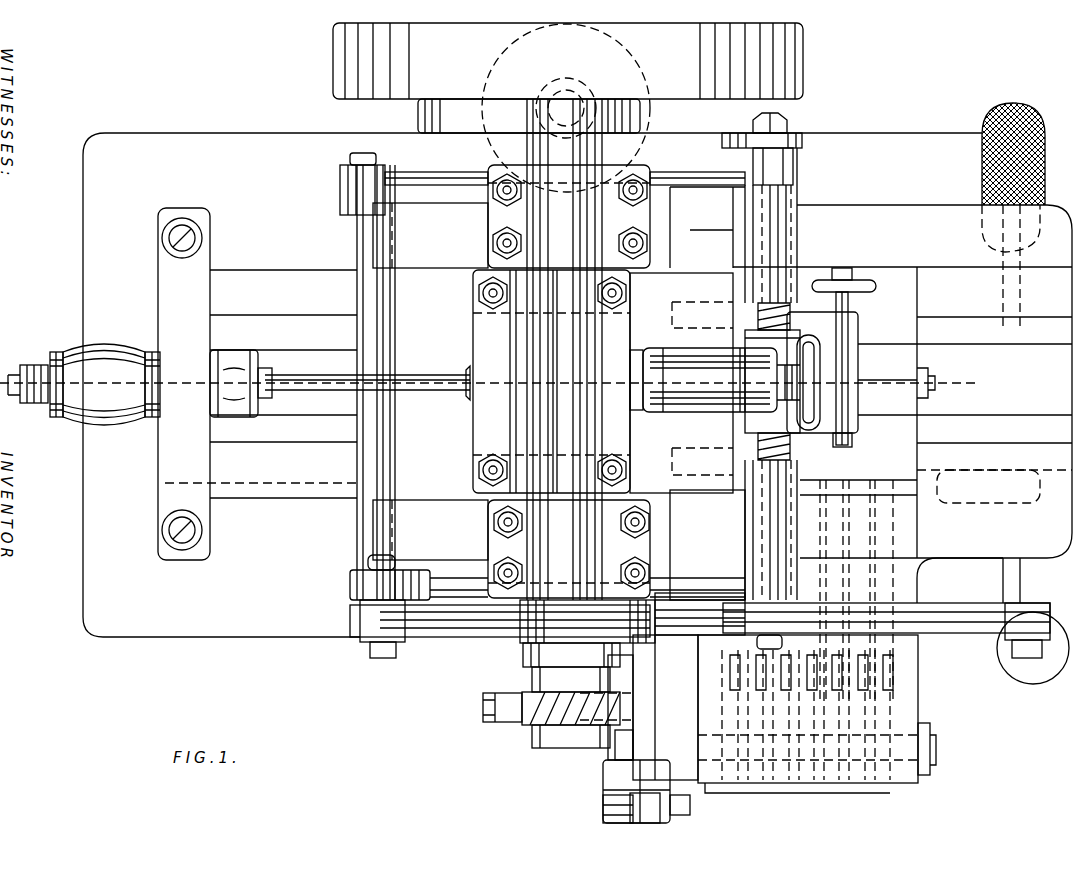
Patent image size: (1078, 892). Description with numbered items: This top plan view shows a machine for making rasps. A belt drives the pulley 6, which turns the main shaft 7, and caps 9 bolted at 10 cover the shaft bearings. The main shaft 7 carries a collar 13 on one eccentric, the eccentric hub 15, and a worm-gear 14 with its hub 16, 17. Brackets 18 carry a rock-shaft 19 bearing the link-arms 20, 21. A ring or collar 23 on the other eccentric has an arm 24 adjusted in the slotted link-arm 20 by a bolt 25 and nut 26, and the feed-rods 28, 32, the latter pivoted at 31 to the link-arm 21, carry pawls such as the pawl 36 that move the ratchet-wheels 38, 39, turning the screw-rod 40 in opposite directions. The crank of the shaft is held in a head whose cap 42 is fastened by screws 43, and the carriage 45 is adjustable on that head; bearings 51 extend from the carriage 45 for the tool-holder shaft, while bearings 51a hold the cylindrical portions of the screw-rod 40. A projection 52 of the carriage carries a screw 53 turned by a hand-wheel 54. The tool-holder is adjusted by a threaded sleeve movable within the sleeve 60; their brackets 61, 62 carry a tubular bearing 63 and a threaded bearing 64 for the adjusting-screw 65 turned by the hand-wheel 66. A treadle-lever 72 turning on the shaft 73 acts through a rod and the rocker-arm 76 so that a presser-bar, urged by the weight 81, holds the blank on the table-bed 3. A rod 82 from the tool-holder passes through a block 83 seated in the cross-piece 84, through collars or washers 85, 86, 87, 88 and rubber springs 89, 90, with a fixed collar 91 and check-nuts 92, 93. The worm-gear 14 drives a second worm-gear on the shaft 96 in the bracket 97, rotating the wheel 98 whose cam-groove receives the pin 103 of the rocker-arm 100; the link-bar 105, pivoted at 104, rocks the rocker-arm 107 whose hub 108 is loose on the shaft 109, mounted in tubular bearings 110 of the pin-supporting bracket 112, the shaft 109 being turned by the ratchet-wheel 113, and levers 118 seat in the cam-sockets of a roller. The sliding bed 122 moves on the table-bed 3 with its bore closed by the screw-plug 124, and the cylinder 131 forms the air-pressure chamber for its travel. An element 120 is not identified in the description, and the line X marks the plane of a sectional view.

The table-bed 3 is at (902, 381).
The pulley 6 is at (798, 72).
The main shaft 7 is at (556, 349).
The caps 9 is at (488, 216).
The bolts 10 is at (492, 243).
The collar 13 is at (514, 116).
The worm-gear 14 is at (483, 706).
The hub of the eccentric 15 is at (571, 655).
The hub of the worm-gear 16 is at (571, 679).
The hub of the worm-gear 17 is at (571, 736).
The brackets 18 is at (430, 381).
The rock-shaft 19 is at (358, 382).
The link-arm 20 is at (390, 577).
The link-arm 21 is at (350, 190).
The ring or collar 23 is at (587, 621).
The arm 24 is at (465, 637).
The bolt or screw 25 is at (382, 658).
The nut 26 is at (362, 642).
The feed-rod 28 is at (455, 578).
The pivot 31 is at (363, 153).
The feed-rod 32 is at (434, 172).
The pawl 36 is at (745, 140).
The ratchet-wheel 38 is at (718, 637).
The ratchet-wheel 39 is at (803, 145).
The screw-rod 40 is at (785, 458).
The cap or cover 42 is at (551, 381).
The screws 43 is at (477, 293).
The carriage 45 is at (665, 383).
The bearings 51 is at (707, 393).
The bearings 51a is at (797, 240).
The projection 52 is at (715, 380).
The screw 53 is at (466, 390).
The hand-wheel 54 is at (820, 362).
The sleeve 60 is at (772, 381).
The bracket 61 is at (822, 372).
The bracket 62 is at (834, 420).
The tubular bearing 63 is at (848, 340).
The tubular threaded bearing 64 is at (852, 396).
The adjusting-screw 65 is at (887, 380).
The hand-wheel 66 is at (855, 280).
The treadle-lever 72 is at (1012, 104).
The shaft 73 is at (939, 577).
The rocker-arm 76 is at (975, 634).
The weight 81 is at (1005, 667).
The rod 82 is at (312, 400).
The block 83 is at (183, 350).
The cross-piece 84 is at (165, 465).
The collar or washer 85 is at (55, 352).
The collar or washer 86 is at (150, 352).
The collar or washer 87 is at (216, 417).
The collar or washer 88 is at (256, 430).
The rubber block or spring 89 is at (108, 350).
The rubber block or spring 90 is at (237, 352).
The fixed collar 91 is at (268, 368).
The check-nut 92 is at (35, 403).
The check-nut 93 is at (40, 368).
The shaft 96 is at (492, 715).
The bracket 97 is at (495, 733).
The wheel 98 is at (612, 760).
The rocker-arm 100 is at (640, 673).
The pin 103 is at (640, 718).
The pivot 104 is at (596, 809).
The link-bar 105 is at (630, 805).
The rocker-arm 107 is at (680, 800).
The hub 108 is at (636, 791).
The shaft 109 is at (930, 745).
The tubular bearings 110 is at (922, 775).
The pin-supporting bracket 112 is at (905, 684).
The ratchet-wheel 113 is at (735, 785).
The levers 118 is at (888, 683).
The bracket 120 is at (910, 586).
The sliding bed 122 is at (905, 358).
The screw-plug 124 is at (928, 392).
The cylinder 131 is at (495, 82).
The section line x x X is at (977, 384).